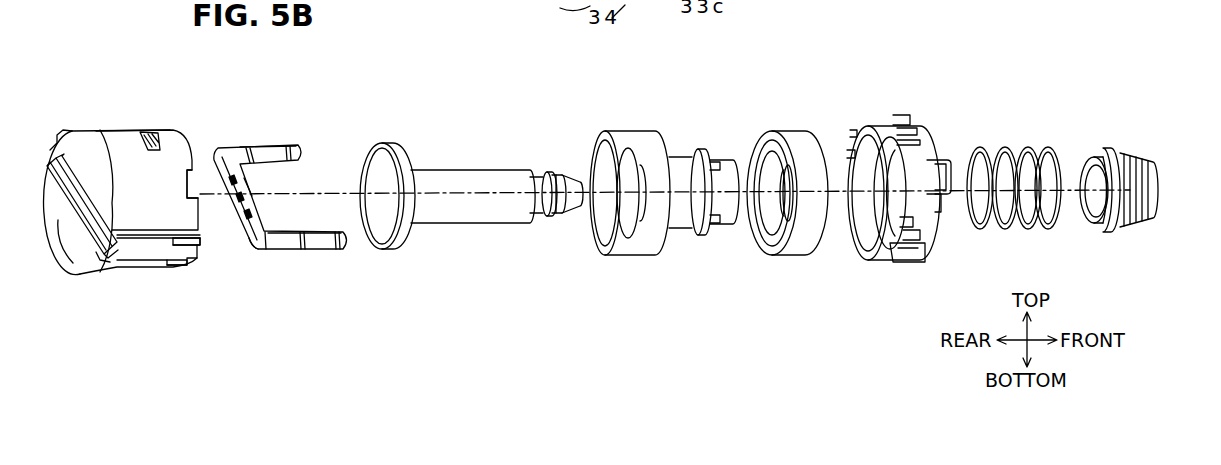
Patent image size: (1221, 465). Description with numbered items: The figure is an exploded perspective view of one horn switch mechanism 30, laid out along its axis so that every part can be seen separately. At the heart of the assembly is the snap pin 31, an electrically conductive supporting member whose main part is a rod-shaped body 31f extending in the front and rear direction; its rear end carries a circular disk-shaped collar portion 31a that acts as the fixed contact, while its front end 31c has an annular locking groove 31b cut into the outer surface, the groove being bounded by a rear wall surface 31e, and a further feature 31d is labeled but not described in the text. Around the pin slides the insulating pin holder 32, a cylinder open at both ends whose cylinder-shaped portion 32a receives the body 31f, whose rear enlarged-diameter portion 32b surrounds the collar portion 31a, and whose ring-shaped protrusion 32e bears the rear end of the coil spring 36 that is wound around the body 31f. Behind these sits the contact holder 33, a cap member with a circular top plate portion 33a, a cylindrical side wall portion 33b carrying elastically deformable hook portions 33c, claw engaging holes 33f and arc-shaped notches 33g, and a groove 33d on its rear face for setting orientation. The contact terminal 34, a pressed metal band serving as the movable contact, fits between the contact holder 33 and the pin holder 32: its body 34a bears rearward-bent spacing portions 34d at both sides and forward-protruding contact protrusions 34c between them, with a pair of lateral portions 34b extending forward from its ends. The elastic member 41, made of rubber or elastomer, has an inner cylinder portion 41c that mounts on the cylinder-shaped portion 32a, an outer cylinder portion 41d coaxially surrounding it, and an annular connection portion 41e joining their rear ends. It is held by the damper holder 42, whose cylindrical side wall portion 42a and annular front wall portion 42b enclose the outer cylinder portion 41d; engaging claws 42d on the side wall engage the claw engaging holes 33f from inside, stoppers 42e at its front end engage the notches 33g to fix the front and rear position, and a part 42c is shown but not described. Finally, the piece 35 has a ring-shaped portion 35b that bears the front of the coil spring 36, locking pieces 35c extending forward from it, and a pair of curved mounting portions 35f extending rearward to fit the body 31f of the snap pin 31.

The horn switch mechanism 30 is at (583, 326).
The snap pin 31 is at (452, 224).
The collar portion 31a is at (383, 143).
The annular locking groove 31b is at (546, 172).
The front end 31c is at (579, 181).
The lens rear groove 31d is at (561, 214).
The rear wall surface 31e is at (536, 213).
The body 31f is at (473, 196).
The pin holder 32 is at (677, 225).
The cylinder-shaped portion 32a is at (677, 230).
The enlarged-diameter portion 32b is at (632, 254).
The ring-shaped protrusion 32e is at (703, 228).
The contact holder 33 is at (151, 272).
The top plate portion 33a is at (68, 135).
The side wall portion 33b is at (122, 130).
The hook portions 33c is at (200, 258).
The groove 33d is at (70, 250).
The claw engaging holes 33f is at (160, 133).
The arc-shaped notches 33g is at (196, 170).
The contact terminal 34 is at (314, 250).
The body 34a is at (247, 227).
The lateral portions 34b is at (238, 145).
The contact protrusions 34c is at (250, 196).
The spacing portions 34d is at (226, 168).
The piece 35 is at (1105, 229).
The ring-shaped portion 35b is at (1112, 148).
The locking pieces 35c is at (1135, 151).
The mounting portions 35f is at (1083, 160).
The coil spring 36 is at (1018, 230).
The elastic member 41 is at (766, 204).
The inner cylinder portion 41c is at (768, 155).
The outer cylinder portion 41d is at (797, 254).
The connection portion 41e is at (768, 138).
The damper holder 42 is at (888, 259).
The side wall portion 42a is at (926, 136).
The front wall portion 42b is at (874, 145).
The holder ring lower tab 42c is at (877, 198).
The engaging claws 42d is at (912, 128).
The stoppers 42e is at (895, 115).